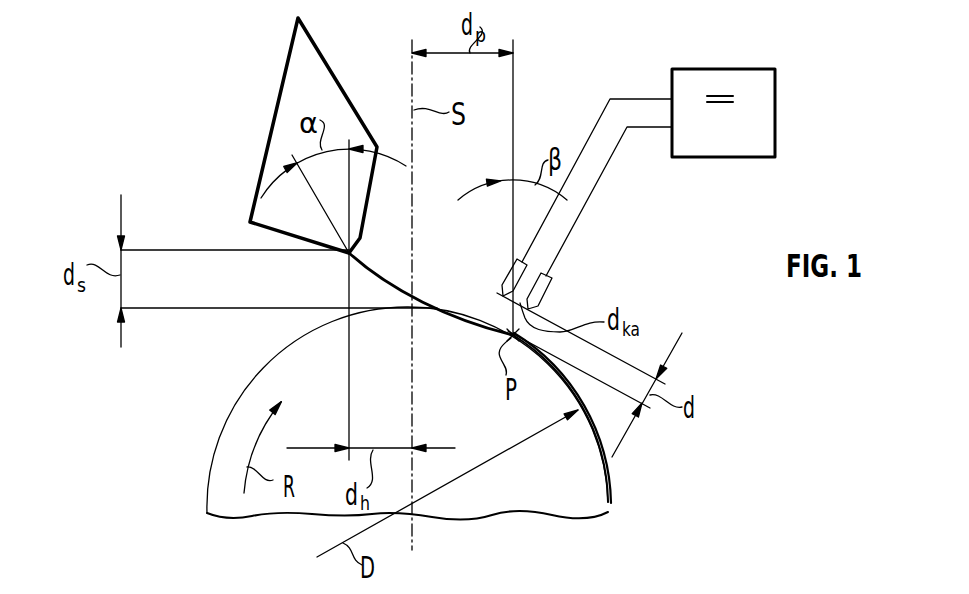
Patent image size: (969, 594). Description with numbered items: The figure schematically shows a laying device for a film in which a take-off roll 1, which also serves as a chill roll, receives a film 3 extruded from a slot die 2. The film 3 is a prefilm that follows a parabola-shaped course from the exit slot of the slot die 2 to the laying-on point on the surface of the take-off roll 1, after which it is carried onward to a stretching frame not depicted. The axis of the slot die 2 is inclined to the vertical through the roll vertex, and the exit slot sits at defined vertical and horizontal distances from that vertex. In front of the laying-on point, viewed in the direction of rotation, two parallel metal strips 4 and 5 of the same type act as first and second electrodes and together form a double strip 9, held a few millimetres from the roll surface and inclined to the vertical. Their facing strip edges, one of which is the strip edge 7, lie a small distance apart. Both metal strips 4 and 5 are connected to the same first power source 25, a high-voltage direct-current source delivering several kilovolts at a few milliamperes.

The take-off roll 1 is at (230, 442).
The slot die 2 is at (217, 78).
The film 3 is at (610, 480).
The metal strip 4 is at (508, 282).
The metal strip 5 is at (545, 292).
The strip edge 7 is at (505, 297).
The double strip 9 is at (520, 250).
The first power source 25 is at (720, 80).